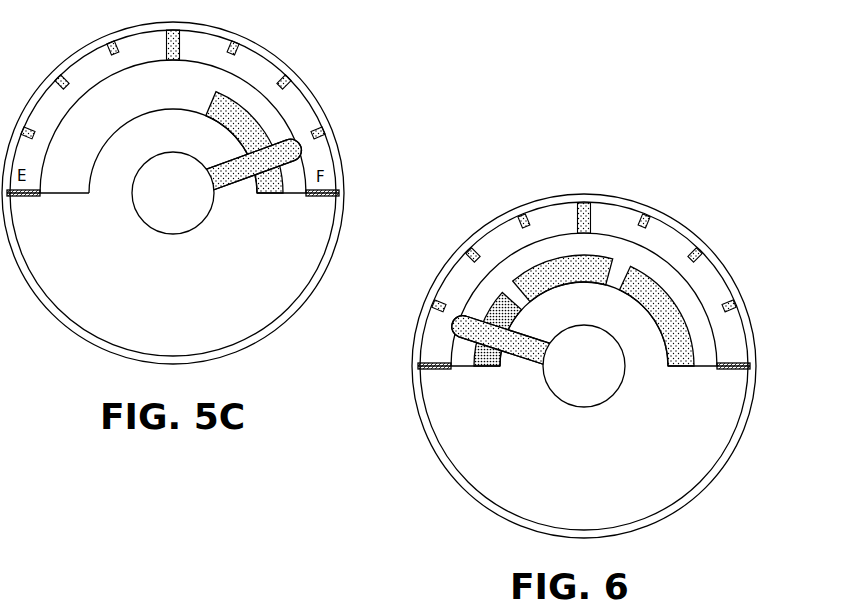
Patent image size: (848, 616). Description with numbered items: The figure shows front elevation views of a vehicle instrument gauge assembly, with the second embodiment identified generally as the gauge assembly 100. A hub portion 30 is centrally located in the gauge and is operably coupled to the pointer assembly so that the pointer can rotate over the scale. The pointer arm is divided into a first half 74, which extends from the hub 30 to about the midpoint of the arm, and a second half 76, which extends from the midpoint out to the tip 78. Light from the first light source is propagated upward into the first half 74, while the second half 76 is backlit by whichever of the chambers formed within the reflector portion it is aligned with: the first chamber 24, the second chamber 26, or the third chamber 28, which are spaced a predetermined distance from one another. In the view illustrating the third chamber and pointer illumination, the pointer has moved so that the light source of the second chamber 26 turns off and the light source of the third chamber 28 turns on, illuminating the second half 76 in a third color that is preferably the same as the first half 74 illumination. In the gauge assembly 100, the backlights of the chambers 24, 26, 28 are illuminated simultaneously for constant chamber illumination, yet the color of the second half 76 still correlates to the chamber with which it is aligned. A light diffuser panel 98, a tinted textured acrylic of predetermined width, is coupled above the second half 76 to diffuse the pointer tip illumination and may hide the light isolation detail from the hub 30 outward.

In FIG. 6, the first chamber 24 is at (456, 355).
In FIG. 6, the second chamber 26 is at (561, 265).
In FIG. 5C, the third chamber 28 is at (284, 173).
In FIG. 6, the third chamber 28 is at (658, 295).
In FIG. 5C, the hub portion 30 is at (205, 222).
In FIG. 6, the hub portion 30 is at (616, 398).
In FIG. 5C, the first half 74 is at (232, 199).
In FIG. 6, the first half 74 is at (521, 372).
In FIG. 5C, the second half 76 is at (269, 183).
In FIG. 6, the second half 76 is at (482, 374).
In FIG. 5C, the tip 78 is at (301, 191).
In FIG. 6, the tip 78 is at (468, 346).
In FIG. 5C, the light diffuser panel 98 is at (240, 90).
In FIG. 6, the light diffuser panel 98 is at (698, 320).
In FIG. 6, the gauge assembly 100 is at (582, 335).